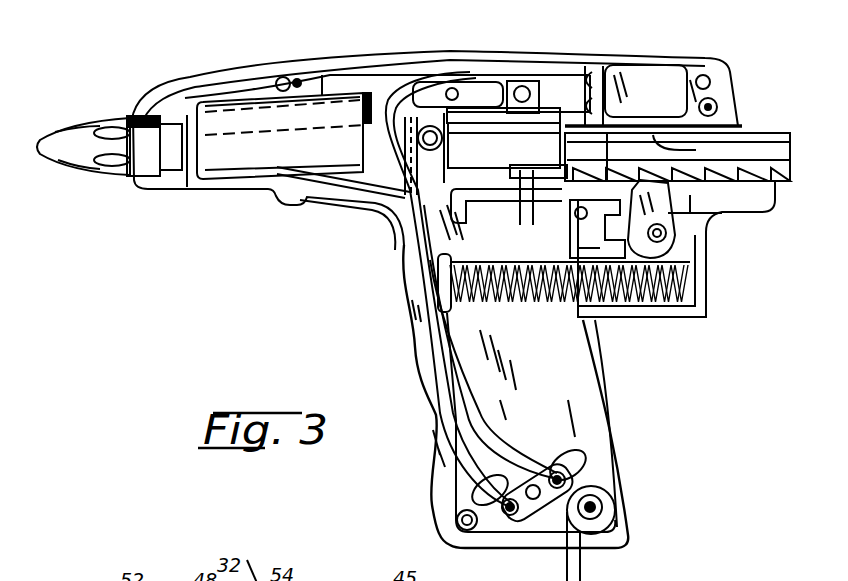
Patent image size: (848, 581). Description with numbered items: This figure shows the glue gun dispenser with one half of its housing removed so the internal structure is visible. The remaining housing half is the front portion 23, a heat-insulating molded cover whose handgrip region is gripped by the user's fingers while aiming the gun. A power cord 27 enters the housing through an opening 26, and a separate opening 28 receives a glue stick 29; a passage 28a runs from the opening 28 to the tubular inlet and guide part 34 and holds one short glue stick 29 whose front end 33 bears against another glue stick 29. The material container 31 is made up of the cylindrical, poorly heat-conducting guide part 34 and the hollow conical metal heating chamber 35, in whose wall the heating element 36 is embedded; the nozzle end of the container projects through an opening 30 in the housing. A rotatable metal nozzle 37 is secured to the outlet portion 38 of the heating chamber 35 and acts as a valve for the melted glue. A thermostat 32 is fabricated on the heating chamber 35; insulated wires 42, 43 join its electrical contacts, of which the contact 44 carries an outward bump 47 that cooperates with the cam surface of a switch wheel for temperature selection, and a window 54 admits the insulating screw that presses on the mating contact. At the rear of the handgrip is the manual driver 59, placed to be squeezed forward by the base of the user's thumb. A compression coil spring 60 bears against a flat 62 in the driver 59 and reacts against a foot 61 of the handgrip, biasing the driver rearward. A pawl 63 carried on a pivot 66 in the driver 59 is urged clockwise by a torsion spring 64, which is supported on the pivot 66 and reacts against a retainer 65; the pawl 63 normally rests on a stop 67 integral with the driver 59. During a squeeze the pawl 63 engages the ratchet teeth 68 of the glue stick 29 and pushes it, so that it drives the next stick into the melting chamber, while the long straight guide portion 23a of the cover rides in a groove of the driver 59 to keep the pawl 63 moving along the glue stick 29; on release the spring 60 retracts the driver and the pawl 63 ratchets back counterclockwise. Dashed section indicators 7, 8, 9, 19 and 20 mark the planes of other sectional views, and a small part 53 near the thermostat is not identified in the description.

The section line 7- 7 is at (248, 66).
The section line 8- 8 is at (682, 60).
The section line 9- 9 is at (160, 86).
The section line 19- 19 is at (520, 15).
The section line 20- 20 is at (432, 252).
The front portion 23 is at (553, 62).
The guide portion 23a is at (527, 172).
The opening 26 is at (563, 555).
The power cord 27 is at (588, 570).
The opening 28 is at (740, 128).
The passage 28a is at (693, 149).
The glue stick 29 is at (587, 150).
The opening 30 is at (135, 118).
The material container 31 is at (296, 85).
The thermostat 32 is at (446, 64).
The front end 33 is at (612, 147).
The inlet and guide part 34 is at (530, 182).
The heating chamber 35 is at (337, 157).
The heating element 36 is at (232, 88).
The rotatable metal nozzle 37 is at (70, 168).
The outlet portion 38 is at (182, 152).
The insulated wire 42 is at (504, 145).
The insulated wire 43 is at (586, 72).
The electrical contact 44 is at (474, 90).
The outward bump 47 is at (447, 116).
The screw 53 is at (524, 80).
The window 54 is at (390, 128).
The manual driver 59 is at (628, 312).
The compression coil spring 60 is at (518, 300).
The foot 61 is at (437, 307).
The flat 62 is at (702, 282).
The pawl 63 is at (673, 226).
The torsion spring 64 is at (598, 229).
The retainer 65 is at (580, 246).
The pivot 66 is at (667, 237).
The stop 67 is at (687, 192).
The ratchet teeth 68 is at (773, 167).